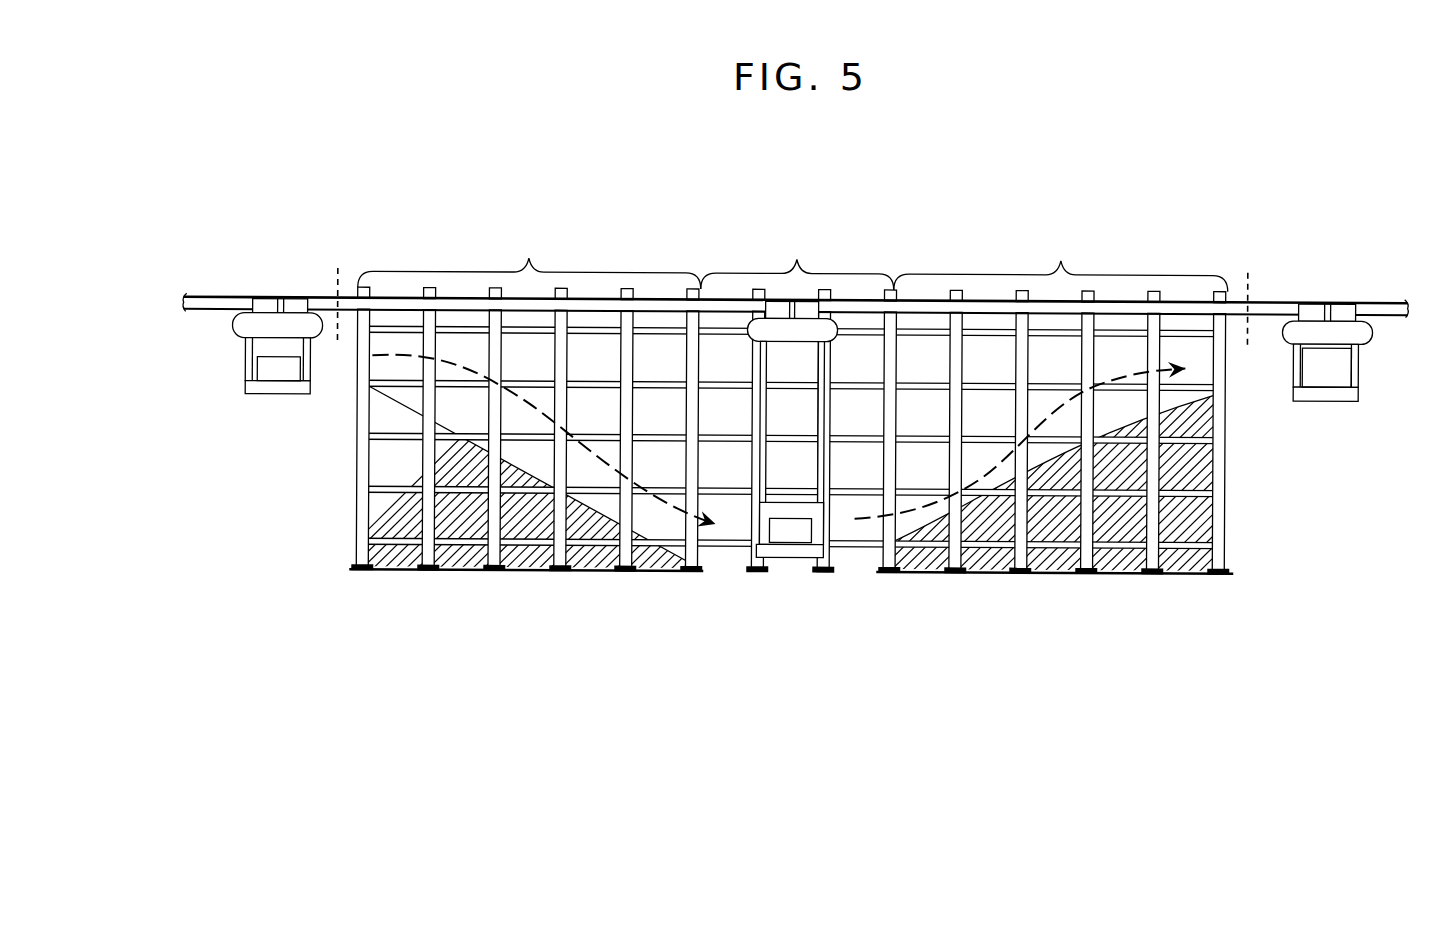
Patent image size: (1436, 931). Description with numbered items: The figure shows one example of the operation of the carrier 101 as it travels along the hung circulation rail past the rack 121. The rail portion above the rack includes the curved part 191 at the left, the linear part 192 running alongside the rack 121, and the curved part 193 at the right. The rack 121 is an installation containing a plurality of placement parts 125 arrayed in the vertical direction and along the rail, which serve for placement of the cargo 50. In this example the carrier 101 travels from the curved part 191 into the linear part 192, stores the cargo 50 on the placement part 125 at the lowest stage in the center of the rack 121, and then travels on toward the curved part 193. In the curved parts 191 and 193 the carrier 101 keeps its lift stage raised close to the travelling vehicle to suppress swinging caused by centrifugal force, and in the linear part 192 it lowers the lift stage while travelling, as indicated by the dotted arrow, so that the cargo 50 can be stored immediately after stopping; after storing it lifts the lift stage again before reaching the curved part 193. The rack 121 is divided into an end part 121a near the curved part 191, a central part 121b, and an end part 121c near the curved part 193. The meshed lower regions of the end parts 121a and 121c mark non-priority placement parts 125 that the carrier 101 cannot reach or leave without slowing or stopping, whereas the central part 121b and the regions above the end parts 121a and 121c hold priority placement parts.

The cargo 50 is at (265, 369).
The carrier 101 is at (767, 469).
The rack 121 is at (841, 413).
The end part 121a is at (529, 255).
The central part 121b is at (797, 258).
The end part 121c is at (1061, 261).
The placement part 125 is at (399, 380).
The curved part 191 is at (321, 293).
The linear part 192 is at (344, 294).
The curved part 193 is at (1266, 300).